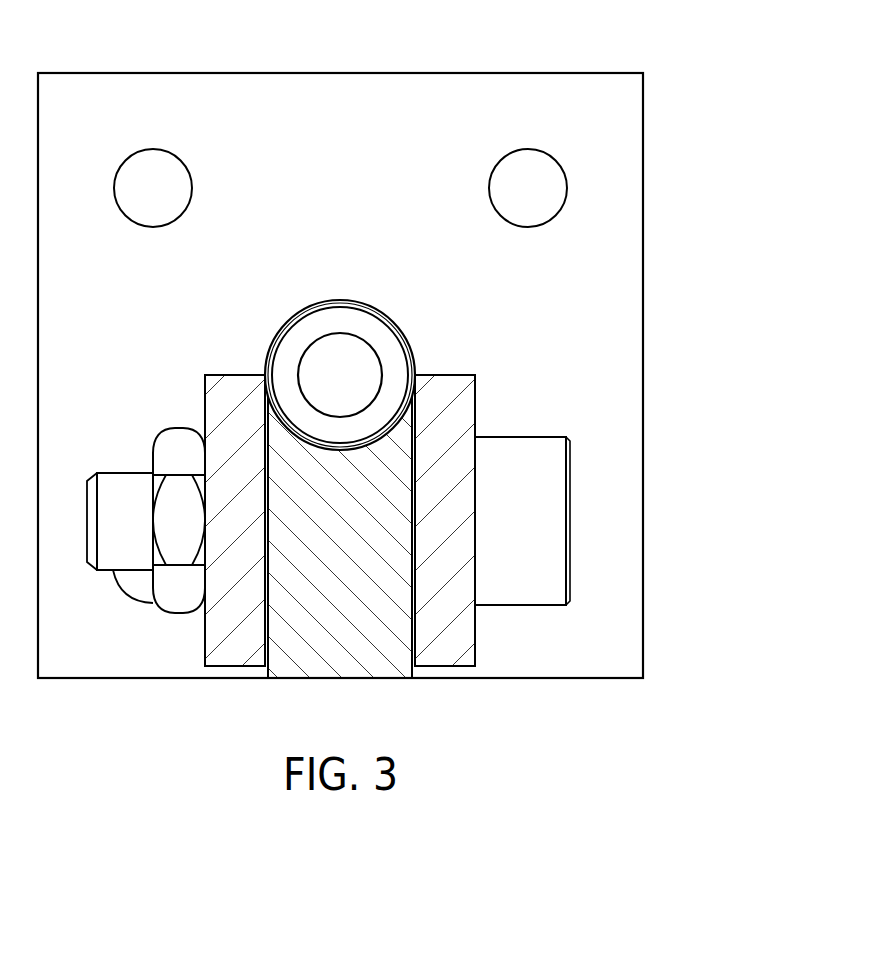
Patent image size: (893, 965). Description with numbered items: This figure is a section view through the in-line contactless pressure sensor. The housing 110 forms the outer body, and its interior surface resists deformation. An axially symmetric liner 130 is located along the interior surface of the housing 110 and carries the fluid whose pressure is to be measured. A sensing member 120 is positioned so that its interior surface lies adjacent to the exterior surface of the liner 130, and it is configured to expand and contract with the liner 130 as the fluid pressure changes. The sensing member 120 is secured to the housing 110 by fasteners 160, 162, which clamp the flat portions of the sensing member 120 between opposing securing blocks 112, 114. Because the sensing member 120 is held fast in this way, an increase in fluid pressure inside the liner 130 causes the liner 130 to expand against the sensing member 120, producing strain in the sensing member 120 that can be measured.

The housing 110 is at (147, 73).
The securing block 112 is at (477, 637).
The securing block 114 is at (205, 635).
The sensing member 120 is at (340, 300).
The liner 130 is at (400, 332).
The fastener 160 is at (538, 436).
The fastener 162 is at (173, 428).